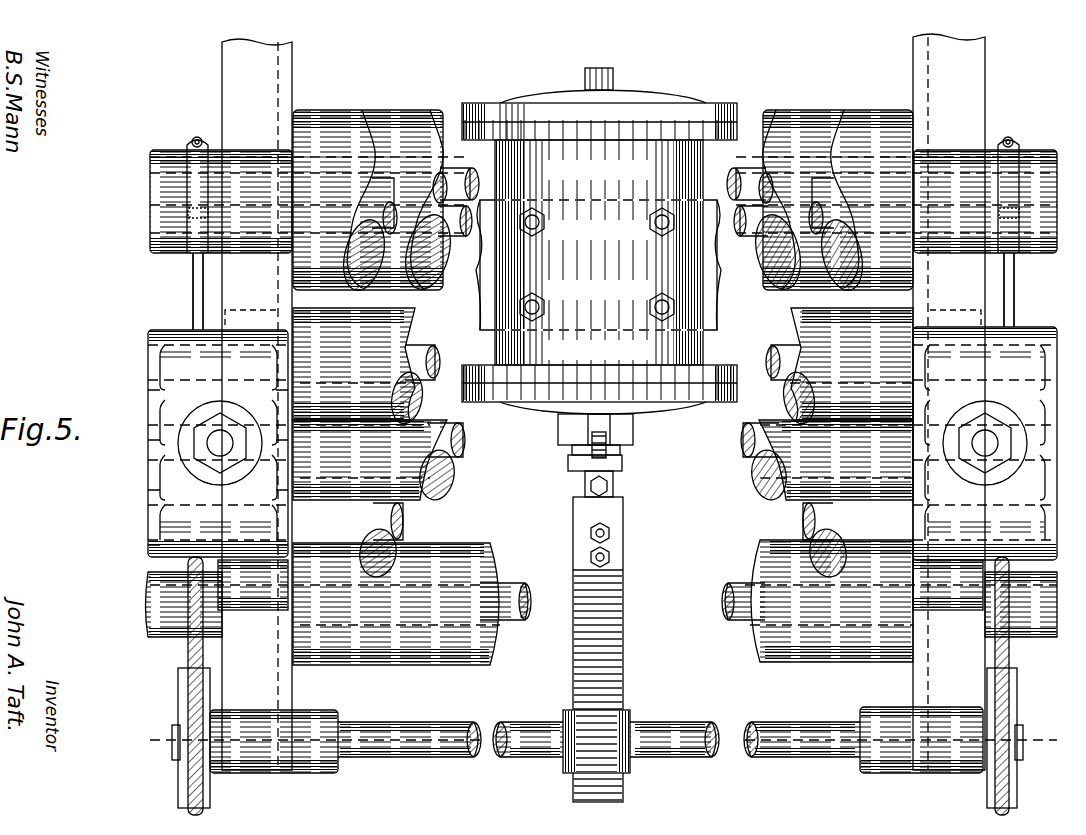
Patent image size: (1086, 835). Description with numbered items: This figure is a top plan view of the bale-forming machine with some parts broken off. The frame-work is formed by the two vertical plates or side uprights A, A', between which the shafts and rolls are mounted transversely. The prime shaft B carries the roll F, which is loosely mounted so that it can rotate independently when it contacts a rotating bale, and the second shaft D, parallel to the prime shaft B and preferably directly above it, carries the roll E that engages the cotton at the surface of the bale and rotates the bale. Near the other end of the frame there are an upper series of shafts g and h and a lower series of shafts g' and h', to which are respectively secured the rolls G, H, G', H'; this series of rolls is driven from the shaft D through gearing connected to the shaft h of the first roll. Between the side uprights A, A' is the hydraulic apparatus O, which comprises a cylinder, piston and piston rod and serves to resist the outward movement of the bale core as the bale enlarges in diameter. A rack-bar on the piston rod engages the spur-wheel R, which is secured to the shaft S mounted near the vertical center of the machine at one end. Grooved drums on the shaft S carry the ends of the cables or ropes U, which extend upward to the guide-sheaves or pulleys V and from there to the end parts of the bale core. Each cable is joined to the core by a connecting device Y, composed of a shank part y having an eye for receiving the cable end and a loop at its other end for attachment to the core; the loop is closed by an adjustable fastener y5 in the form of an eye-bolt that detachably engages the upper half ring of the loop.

The side upright A is at (241, 404).
The side upright A' is at (973, 402).
The prime shaft B is at (758, 130).
The second shaft D is at (790, 150).
The roll E is at (325, 130).
The roll F is at (405, 130).
The roll G is at (408, 541).
The roll G' is at (421, 595).
The roll H is at (374, 367).
The roll H' is at (398, 461).
The hydraulic apparatus O is at (599, 282).
The spur-wheel R is at (615, 650).
The shaft S is at (532, 745).
The cable U is at (192, 643).
The guide-sheave V is at (186, 702).
The connecting device Y is at (603, 233).
The shaft g is at (810, 541).
The shaft g' is at (800, 601).
The shaft h is at (830, 367).
The shaft h' is at (802, 461).
The shank part y is at (192, 296).
The adjustable fastener y5 is at (205, 108).